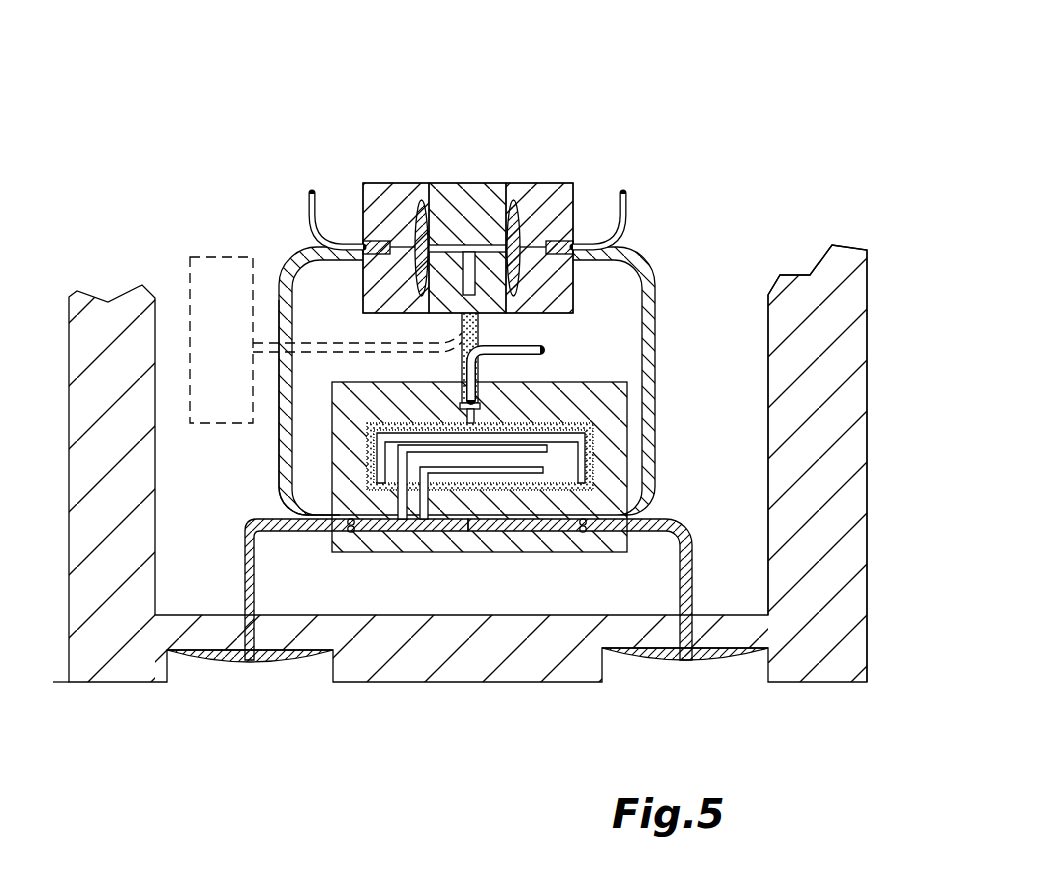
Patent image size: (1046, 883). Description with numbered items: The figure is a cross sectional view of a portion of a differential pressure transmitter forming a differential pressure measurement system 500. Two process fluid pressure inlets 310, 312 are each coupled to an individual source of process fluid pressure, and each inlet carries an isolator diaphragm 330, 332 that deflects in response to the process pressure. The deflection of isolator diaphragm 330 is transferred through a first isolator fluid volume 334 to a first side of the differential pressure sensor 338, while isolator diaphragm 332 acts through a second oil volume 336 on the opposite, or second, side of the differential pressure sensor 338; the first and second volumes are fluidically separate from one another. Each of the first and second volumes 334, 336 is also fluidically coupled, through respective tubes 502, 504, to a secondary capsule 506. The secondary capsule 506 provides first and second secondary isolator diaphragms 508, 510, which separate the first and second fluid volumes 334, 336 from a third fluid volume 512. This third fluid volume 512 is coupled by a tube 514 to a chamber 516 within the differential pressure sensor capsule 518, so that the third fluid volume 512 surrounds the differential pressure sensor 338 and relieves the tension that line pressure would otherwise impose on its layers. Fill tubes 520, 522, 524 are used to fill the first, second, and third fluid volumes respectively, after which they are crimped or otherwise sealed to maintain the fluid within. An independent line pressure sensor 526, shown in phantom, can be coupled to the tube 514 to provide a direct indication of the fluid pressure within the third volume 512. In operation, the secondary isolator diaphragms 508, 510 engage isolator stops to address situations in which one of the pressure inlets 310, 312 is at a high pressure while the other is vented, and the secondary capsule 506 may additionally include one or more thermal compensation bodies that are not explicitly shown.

The differential pressure measurement system 500 is at (574, 81).
The tube 502 is at (280, 440).
The tube 504 is at (656, 377).
The secondary capsule 506 is at (491, 203).
The first secondary isolator diaphragm 508 is at (415, 205).
The second secondary isolator diaphragm 510 is at (507, 203).
The third fluid volume 512 is at (449, 238).
The tube 514 is at (478, 336).
The chamber 516 is at (377, 431).
The differential pressure sensor capsule 518 is at (628, 432).
The fill tube 520 is at (307, 215).
The fill tube 522 is at (624, 216).
The fill tube 524 is at (521, 353).
The independent line pressure sensor 526 is at (242, 333).
The differential pressure sensor 338 is at (582, 416).
The first isolator fluid volume 334 is at (246, 527).
The second oil volume 336 is at (662, 524).
The isolator diaphragm 330 is at (191, 660).
The isolator diaphragm 332 is at (668, 668).
The process fluid pressure inlet 310 is at (302, 703).
The process fluid pressure inlet 312 is at (756, 695).